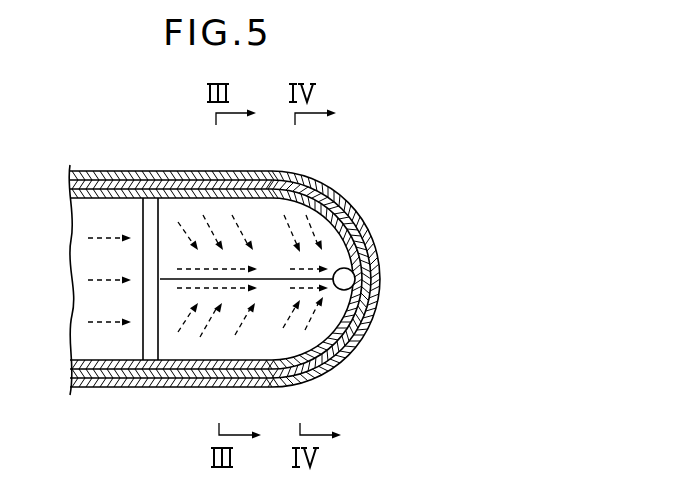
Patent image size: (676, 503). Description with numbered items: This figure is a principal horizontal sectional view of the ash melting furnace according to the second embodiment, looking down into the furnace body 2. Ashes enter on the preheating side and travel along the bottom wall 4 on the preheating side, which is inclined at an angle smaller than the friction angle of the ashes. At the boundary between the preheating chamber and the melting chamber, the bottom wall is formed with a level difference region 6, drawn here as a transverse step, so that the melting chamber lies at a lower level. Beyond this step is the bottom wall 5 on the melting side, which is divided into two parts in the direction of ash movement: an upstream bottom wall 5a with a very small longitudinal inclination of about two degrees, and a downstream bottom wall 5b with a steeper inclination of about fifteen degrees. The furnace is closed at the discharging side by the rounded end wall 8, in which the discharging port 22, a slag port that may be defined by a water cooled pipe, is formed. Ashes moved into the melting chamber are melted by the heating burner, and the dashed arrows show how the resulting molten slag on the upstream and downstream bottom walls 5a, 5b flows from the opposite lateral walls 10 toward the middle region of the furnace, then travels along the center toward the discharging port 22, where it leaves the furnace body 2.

The furnace body 2 is at (360, 373).
The bottom wall on the preheating side 4 is at (98, 353).
The bottom wall on the melting side 5 is at (284, 223).
The upstream bottom wall 5a is at (278, 201).
The downstream bottom wall 5b is at (365, 220).
The level difference region 6 is at (154, 358).
The end wall on the discharging side 8 is at (381, 291).
The lateral walls 10 is at (200, 171).
The discharging port 22 is at (357, 271).